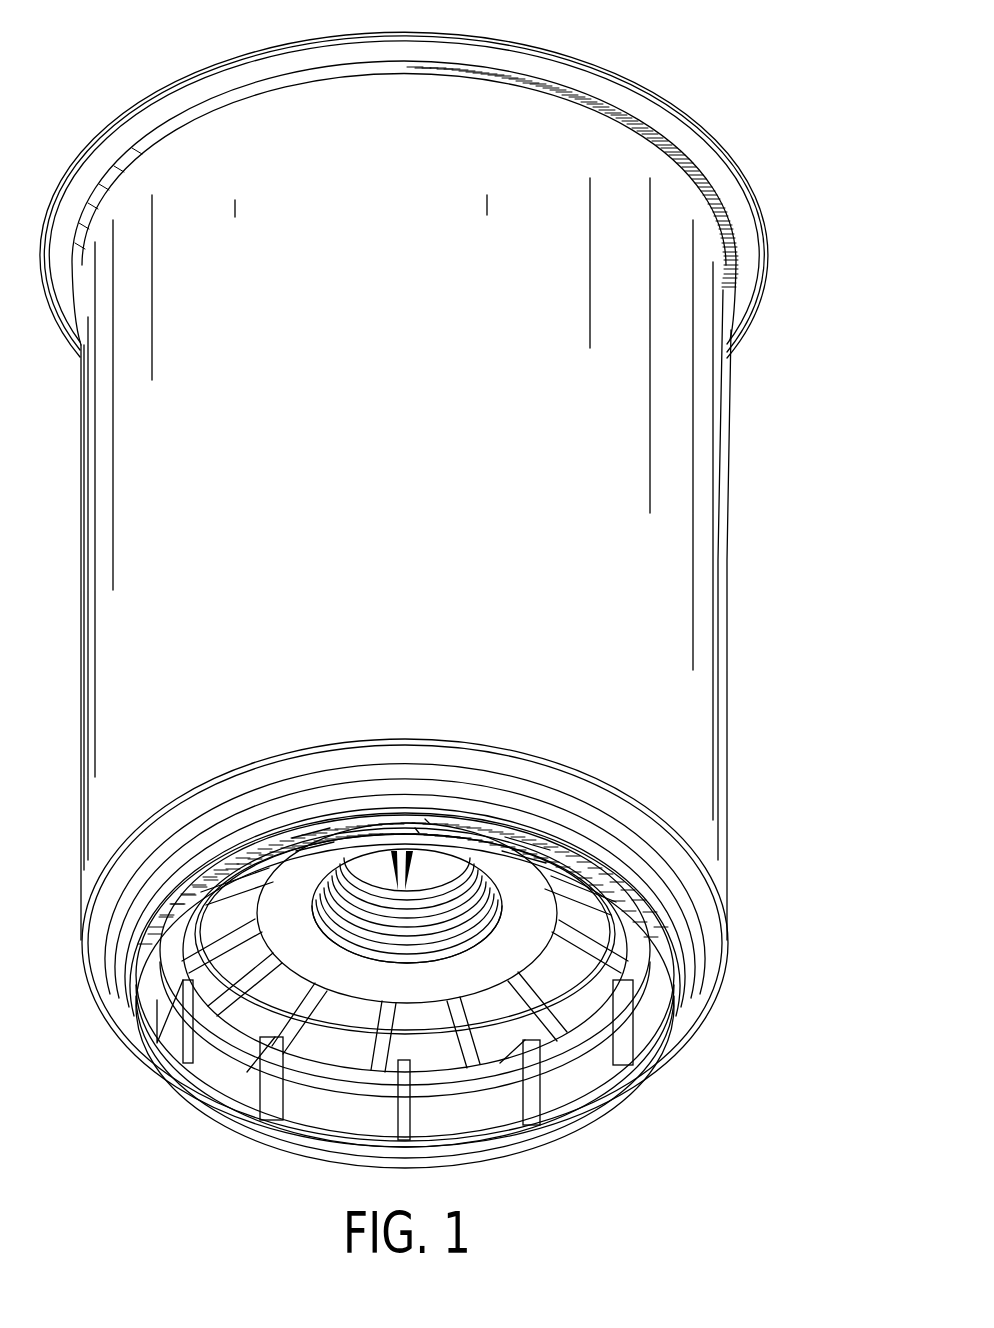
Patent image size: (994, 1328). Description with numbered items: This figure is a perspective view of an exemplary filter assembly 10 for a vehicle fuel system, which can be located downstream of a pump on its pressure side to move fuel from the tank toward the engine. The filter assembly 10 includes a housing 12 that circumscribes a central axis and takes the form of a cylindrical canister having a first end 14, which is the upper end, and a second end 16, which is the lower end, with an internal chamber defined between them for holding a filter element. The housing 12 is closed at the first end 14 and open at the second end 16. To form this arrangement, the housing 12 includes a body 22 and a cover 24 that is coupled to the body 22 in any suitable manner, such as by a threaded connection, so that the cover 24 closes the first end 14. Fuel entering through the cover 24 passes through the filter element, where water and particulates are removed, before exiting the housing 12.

The filter assembly 10 is at (771, 75).
The housing 12 is at (702, 658).
The first end 14 is at (720, 290).
The second end 16 is at (648, 1060).
The body 22 is at (727, 545).
The cover 24 is at (748, 242).